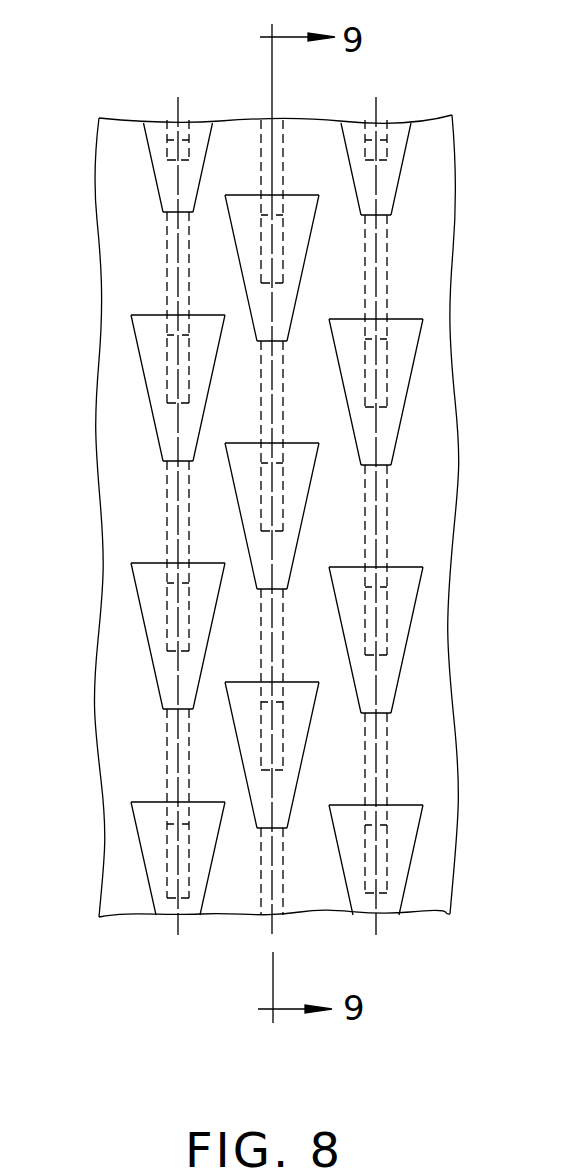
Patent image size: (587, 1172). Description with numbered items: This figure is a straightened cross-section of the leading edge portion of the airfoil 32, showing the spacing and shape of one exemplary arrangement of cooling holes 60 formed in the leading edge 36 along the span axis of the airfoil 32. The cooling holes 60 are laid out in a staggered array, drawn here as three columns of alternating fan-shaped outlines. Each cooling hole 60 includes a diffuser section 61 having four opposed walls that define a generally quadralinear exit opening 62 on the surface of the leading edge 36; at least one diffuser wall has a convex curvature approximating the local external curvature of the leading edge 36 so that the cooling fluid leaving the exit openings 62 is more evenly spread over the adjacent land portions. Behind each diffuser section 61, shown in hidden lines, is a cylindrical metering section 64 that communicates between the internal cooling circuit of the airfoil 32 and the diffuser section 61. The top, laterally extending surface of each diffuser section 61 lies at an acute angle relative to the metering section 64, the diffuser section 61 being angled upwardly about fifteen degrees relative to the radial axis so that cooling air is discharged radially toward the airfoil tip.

The airfoil 32 is at (422, 98).
The leading edge 36 is at (115, 751).
The cooling hole 60 is at (122, 375).
The diffuser section 61 is at (160, 177).
The exit opening 62 is at (148, 315).
The metering section 64 is at (163, 753).